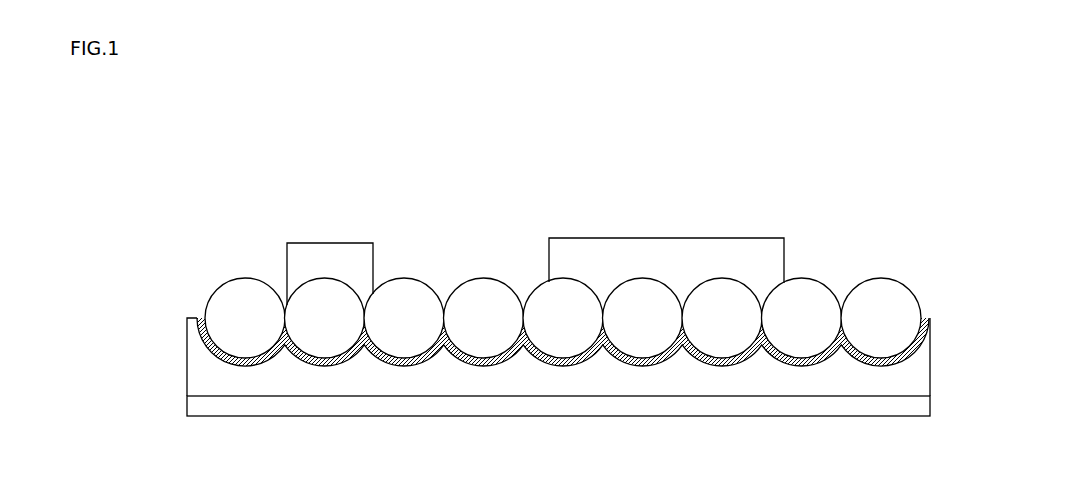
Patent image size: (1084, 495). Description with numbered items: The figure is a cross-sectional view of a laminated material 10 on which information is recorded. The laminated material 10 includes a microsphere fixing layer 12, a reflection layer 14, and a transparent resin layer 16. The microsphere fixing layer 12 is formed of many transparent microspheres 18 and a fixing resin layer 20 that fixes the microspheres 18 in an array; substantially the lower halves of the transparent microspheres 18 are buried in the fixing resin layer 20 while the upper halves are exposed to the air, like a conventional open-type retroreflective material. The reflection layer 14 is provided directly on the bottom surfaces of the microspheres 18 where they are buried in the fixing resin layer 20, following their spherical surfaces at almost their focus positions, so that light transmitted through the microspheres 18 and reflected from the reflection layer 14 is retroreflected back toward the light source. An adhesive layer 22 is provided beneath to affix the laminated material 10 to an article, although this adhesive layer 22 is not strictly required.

The laminated material 10 is at (205, 183).
The microsphere fixing layer 12 is at (131, 287).
The reflection layer 14 is at (810, 360).
The transparent resin layer 16 is at (333, 260).
The transparent microspheres 18 is at (225, 312).
The fixing resin layer 20 is at (203, 378).
The adhesive layer 22 is at (203, 413).